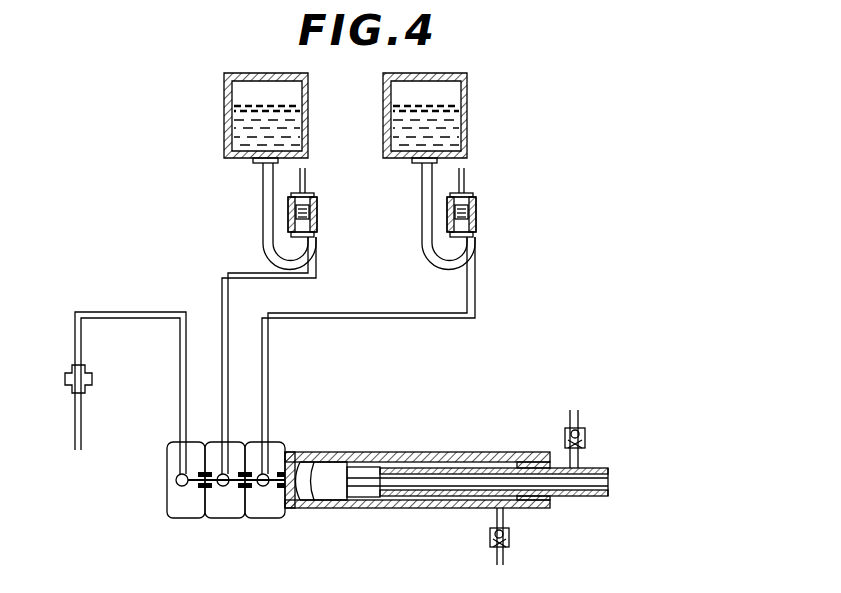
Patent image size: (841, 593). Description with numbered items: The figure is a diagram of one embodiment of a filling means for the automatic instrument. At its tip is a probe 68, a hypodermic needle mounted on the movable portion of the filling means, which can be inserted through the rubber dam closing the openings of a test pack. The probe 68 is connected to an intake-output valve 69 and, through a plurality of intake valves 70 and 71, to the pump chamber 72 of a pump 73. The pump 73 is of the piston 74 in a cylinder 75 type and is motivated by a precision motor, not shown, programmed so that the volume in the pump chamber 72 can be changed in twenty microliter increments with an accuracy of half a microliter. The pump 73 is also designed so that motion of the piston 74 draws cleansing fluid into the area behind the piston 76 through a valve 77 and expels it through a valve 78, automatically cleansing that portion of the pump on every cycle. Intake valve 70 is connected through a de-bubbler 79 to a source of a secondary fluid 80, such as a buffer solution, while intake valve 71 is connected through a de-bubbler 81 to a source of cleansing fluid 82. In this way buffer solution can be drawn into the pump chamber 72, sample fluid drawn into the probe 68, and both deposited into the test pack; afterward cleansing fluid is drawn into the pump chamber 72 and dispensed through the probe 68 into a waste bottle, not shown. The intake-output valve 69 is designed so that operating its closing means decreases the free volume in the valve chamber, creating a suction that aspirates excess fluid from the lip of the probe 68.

The probe 68 is at (82, 421).
The intake-output valve 69 is at (184, 516).
The intake valve 70 is at (229, 516).
The intake valve 71 is at (283, 518).
The pump chamber 72 is at (303, 472).
The pump 73 is at (387, 449).
The piston 74 is at (331, 477).
The cylinder 75 is at (387, 510).
The area behind the piston 76 is at (425, 468).
The valve 77 is at (582, 419).
The valve 78 is at (509, 553).
The de-bubbler 79 is at (318, 216).
The source of a secondary fluid 80 is at (276, 138).
The de-bubbler 81 is at (477, 218).
The source of cleansing fluid 82 is at (447, 128).